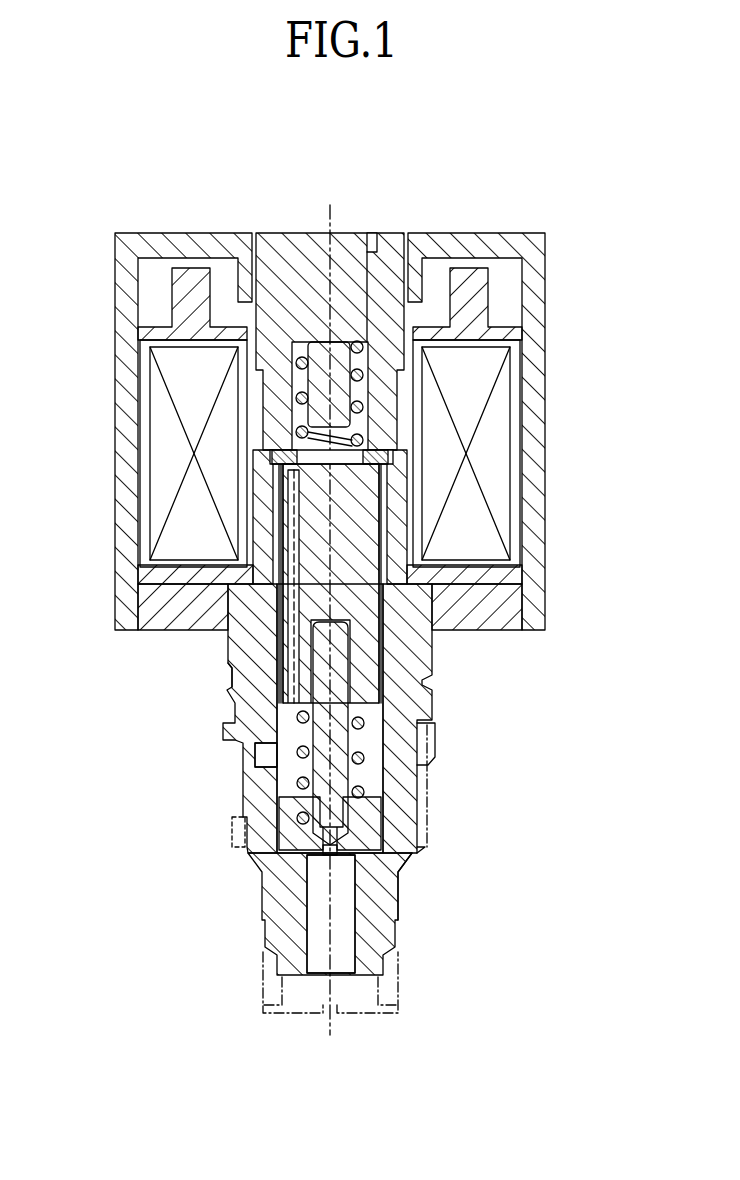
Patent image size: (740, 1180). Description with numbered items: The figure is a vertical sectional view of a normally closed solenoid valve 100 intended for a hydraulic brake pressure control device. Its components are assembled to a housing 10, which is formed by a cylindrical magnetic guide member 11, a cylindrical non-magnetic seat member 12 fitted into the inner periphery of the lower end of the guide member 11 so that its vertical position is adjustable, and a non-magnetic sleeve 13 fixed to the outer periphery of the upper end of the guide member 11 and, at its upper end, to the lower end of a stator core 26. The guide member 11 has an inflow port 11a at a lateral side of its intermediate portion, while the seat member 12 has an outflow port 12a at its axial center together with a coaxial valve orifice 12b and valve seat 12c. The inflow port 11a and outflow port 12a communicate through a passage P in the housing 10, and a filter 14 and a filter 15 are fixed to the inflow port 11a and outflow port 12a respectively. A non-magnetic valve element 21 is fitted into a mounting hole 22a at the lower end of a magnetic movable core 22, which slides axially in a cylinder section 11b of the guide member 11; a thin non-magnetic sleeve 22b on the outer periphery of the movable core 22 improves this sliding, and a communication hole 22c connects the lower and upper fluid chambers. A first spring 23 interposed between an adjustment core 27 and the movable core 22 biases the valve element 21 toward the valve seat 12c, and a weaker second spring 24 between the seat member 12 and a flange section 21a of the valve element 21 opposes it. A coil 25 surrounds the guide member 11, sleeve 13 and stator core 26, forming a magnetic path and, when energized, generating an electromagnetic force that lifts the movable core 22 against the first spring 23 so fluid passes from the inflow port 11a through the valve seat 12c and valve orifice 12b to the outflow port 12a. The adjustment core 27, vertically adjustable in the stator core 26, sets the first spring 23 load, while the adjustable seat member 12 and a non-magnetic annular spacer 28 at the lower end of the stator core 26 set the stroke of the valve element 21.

The normally closed solenoid valve 100 is at (115, 245).
The adjustment core 27 is at (343, 242).
The stator core 26 is at (385, 280).
The first spring 23 is at (360, 375).
The coil 25 is at (492, 440).
The annular spacer 28 is at (370, 455).
The communication hole 22c is at (280, 510).
The sleeve 13 is at (400, 526).
The thin sleeve 22b is at (280, 637).
The housing 10 is at (229, 665).
The guide member 11 is at (233, 698).
The inflow port 11a is at (262, 748).
The passage P is at (292, 778).
The filter 14 is at (238, 830).
The seat member 12 is at (285, 897).
The filter 15 is at (357, 1012).
The cylinder section 11b is at (367, 660).
The movable core 22 is at (432, 678).
The mounting hole 22a is at (342, 702).
The flange section 21a is at (435, 722).
The second spring 24 is at (358, 775).
The valve element 21 is at (360, 815).
The valve seat 12c is at (338, 850).
The valve orifice 12b is at (400, 878).
The outflow port 12a is at (340, 937).